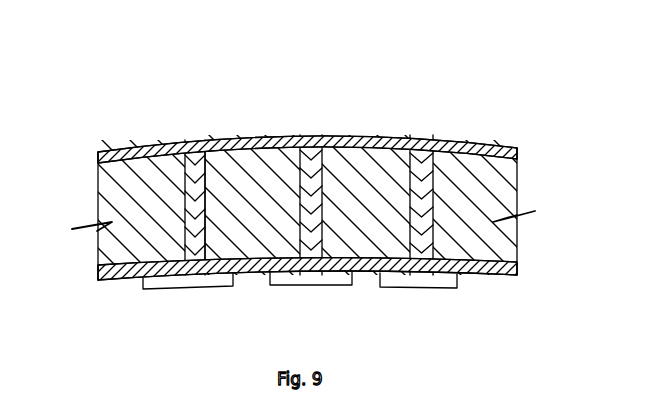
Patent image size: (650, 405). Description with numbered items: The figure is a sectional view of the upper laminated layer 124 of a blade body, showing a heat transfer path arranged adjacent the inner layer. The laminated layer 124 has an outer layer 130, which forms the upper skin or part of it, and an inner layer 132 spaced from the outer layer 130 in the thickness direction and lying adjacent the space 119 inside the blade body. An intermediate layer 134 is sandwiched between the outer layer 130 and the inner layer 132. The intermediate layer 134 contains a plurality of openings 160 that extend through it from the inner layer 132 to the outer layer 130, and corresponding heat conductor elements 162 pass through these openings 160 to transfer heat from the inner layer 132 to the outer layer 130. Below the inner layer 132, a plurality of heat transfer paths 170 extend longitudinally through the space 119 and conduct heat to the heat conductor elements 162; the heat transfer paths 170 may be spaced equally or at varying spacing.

The upper laminated layer 124 is at (63, 49).
The outer layer 130 is at (462, 143).
The inner layer 132 is at (487, 280).
The intermediate layer 134 is at (482, 192).
The openings 160 is at (210, 217).
The heat conductor elements 162 is at (187, 215).
The heat transfer paths 170 is at (180, 282).
The space 119 is at (327, 320).